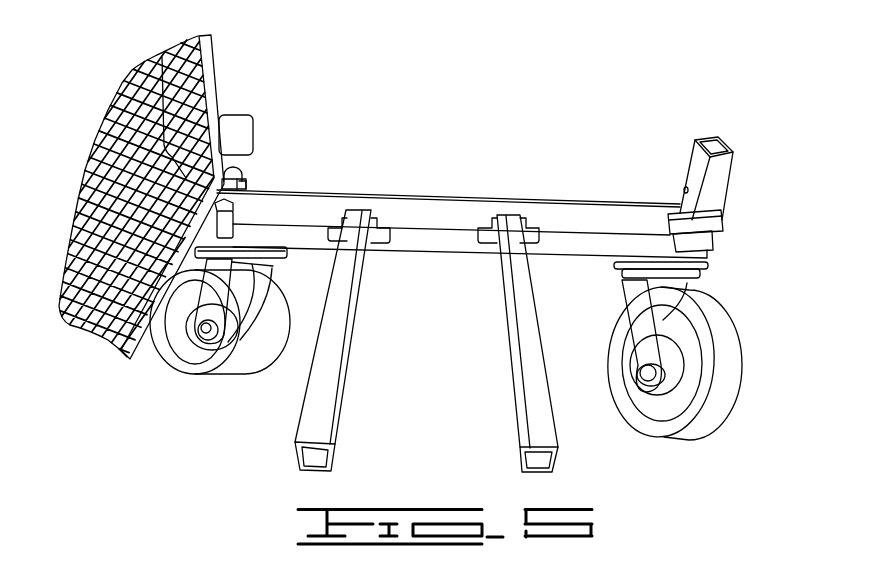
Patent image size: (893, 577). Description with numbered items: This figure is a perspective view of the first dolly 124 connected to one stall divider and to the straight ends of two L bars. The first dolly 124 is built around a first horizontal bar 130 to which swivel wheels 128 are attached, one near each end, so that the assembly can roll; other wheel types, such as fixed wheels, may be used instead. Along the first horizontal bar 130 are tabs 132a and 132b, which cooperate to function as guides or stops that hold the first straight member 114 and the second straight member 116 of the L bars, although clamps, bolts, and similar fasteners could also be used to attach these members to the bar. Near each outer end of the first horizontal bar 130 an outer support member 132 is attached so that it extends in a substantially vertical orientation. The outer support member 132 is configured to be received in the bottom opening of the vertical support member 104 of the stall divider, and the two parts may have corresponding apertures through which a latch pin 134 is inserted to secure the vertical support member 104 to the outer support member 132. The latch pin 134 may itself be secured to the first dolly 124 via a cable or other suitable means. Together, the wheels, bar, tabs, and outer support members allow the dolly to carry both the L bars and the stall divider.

The vertical support member 104 is at (217, 80).
The latch pin 134 is at (243, 181).
The first horizontal bar 130 is at (622, 244).
The outer support member 132 is at (733, 172).
The tab 132a is at (338, 229).
The tab 132b is at (383, 232).
The second straight member 116 is at (298, 422).
The first straight member 114 is at (515, 416).
The swivel wheel 128 is at (198, 368).
The first dolly 124 is at (716, 62).